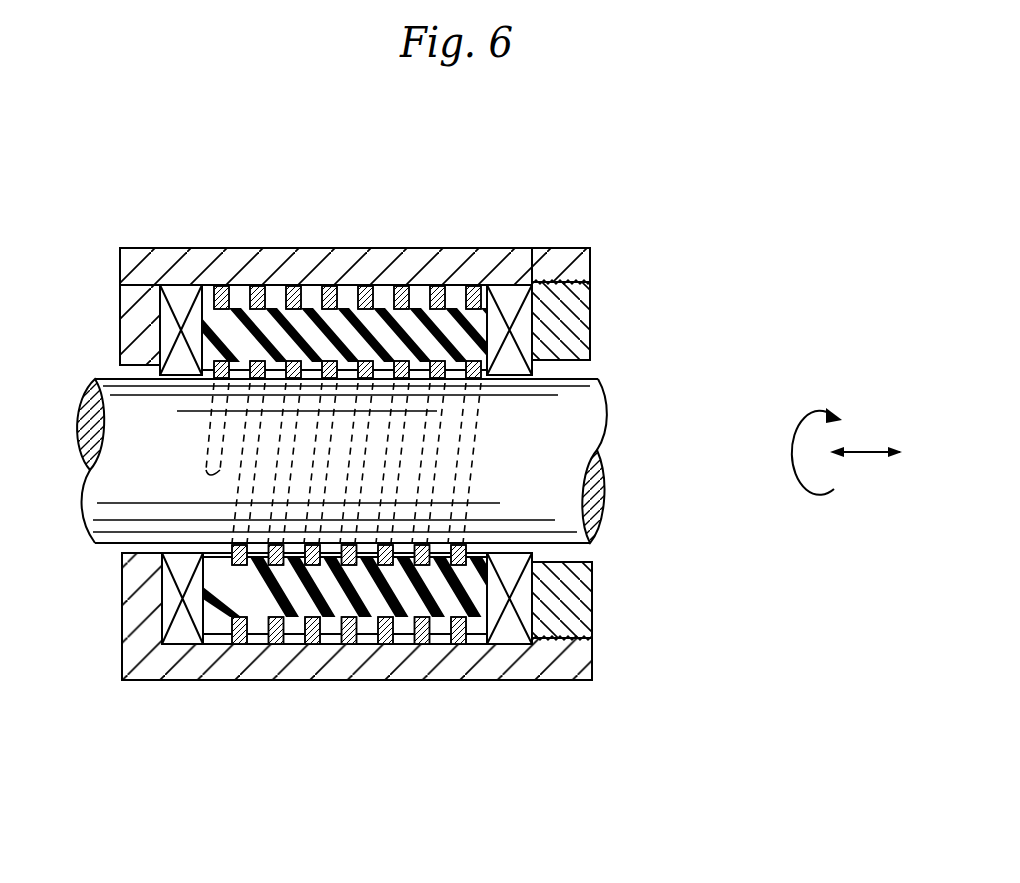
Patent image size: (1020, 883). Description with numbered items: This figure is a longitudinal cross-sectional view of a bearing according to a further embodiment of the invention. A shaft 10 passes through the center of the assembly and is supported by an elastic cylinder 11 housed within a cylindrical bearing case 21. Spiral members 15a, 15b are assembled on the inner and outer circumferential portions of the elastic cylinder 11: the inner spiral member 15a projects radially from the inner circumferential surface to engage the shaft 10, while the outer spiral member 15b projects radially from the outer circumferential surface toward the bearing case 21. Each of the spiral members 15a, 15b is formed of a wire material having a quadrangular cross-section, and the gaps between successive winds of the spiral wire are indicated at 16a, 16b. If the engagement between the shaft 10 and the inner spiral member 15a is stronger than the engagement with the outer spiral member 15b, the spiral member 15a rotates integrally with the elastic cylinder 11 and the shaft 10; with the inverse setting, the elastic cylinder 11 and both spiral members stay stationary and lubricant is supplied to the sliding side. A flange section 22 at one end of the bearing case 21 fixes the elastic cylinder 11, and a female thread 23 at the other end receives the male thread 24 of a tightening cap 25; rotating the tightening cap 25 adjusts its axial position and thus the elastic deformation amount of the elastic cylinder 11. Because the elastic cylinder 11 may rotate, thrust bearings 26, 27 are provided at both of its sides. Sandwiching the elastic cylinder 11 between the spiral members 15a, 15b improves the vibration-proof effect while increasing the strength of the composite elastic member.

The shaft 10 is at (577, 413).
The elastic cylinder 11 is at (220, 605).
The inner spiral member 15a is at (470, 372).
The outer spiral member 15b is at (332, 290).
The rollers 16a is at (398, 642).
The rollers 16b is at (283, 292).
The bearing case 21 is at (480, 262).
The flange section 22 is at (133, 323).
The female thread 23 is at (592, 620).
The male thread 24 is at (575, 274).
The tightening cap 25 is at (575, 328).
The thrust bearing 26 is at (182, 638).
The thrust bearing 27 is at (512, 624).